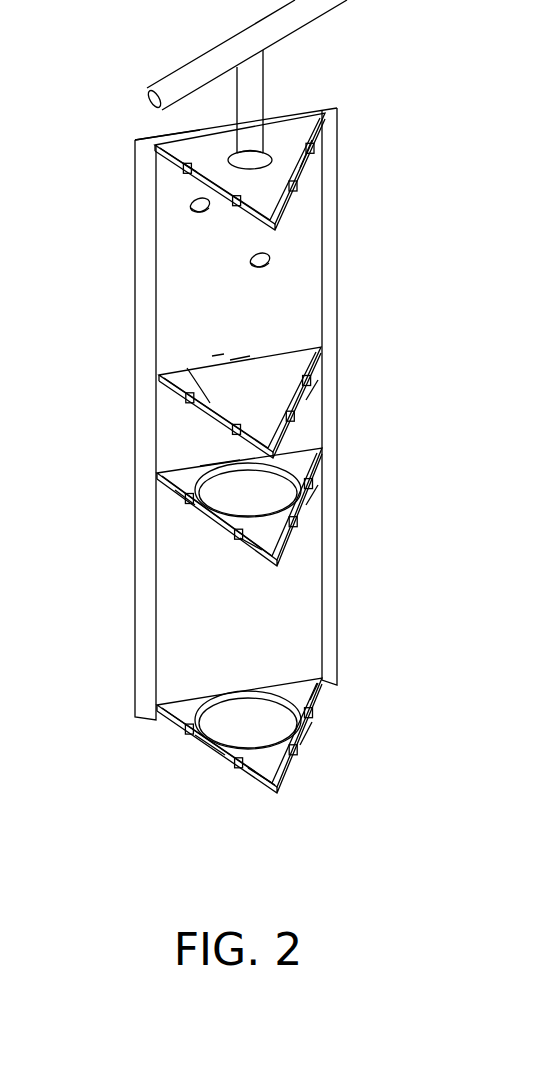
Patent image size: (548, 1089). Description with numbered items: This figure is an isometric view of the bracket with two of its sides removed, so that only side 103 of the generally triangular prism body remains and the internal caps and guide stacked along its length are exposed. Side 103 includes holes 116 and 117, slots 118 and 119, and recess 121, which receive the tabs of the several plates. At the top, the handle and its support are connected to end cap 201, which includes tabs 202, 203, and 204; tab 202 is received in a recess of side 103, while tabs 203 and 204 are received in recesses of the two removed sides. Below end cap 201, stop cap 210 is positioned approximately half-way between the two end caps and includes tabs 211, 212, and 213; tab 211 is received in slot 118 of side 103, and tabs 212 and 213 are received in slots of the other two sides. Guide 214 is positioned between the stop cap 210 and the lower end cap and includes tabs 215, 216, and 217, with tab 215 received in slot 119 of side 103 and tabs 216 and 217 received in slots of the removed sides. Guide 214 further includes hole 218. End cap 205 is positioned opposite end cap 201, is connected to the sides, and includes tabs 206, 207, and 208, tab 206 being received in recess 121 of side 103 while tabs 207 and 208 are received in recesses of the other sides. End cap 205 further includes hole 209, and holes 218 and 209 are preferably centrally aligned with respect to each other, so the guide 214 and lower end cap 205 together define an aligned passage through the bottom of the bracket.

The side 103 is at (338, 240).
The end cap 201 is at (300, 113).
The tab 202 is at (135, 143).
The tab 203 is at (197, 185).
The tab 204 is at (323, 162).
The hole 116 is at (200, 212).
The hole 117 is at (260, 268).
The slot 118 is at (218, 358).
The tab 213 is at (193, 368).
The stop cap 210 is at (292, 367).
The tab 211 is at (240, 358).
The tab 212 is at (323, 387).
The slot 119 is at (227, 462).
The guide 214 is at (277, 570).
The tab 215 is at (230, 500).
The tab 216 is at (322, 498).
The tab 217 is at (185, 515).
The hole 218 is at (250, 547).
The recess 121 is at (208, 690).
The end cap 205 is at (290, 777).
The tab 206 is at (315, 695).
The tab 207 is at (318, 733).
The tab 208 is at (210, 748).
The hole 209 is at (263, 752).